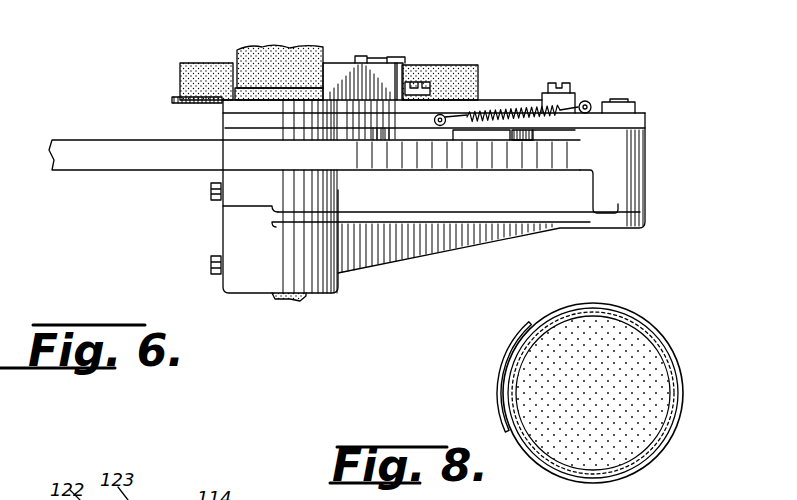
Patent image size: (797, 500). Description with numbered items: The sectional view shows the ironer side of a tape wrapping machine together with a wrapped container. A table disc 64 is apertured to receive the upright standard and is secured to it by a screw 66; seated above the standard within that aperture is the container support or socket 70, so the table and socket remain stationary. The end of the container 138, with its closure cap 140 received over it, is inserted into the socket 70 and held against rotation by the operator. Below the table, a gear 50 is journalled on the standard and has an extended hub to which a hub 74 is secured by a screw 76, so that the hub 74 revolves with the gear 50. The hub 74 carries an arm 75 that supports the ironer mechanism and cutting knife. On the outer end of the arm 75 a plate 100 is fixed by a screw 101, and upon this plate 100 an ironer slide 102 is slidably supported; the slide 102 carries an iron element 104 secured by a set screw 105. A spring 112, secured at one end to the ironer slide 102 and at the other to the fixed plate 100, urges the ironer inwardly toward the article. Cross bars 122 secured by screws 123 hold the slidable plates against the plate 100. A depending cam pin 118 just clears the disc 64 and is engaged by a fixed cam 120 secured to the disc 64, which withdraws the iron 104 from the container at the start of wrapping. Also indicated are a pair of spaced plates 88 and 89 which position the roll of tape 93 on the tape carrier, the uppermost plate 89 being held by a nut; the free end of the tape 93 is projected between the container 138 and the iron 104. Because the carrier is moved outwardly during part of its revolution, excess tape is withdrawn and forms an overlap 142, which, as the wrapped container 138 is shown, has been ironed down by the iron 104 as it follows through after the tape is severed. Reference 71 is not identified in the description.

In FIG. 6, the gear 50 is at (292, 300).
In FIG. 6, the table disc 64 is at (80, 145).
In FIG. 6, the screw 66 is at (210, 190).
In FIG. 6, the container support or socket 70 is at (237, 103).
In FIG. 6, the plate 71 is at (232, 113).
In FIG. 6, the hub 74 is at (235, 245).
In FIG. 6, the arm 75 is at (617, 192).
In FIG. 6, the screw 76 is at (210, 265).
In FIG. 6, the plate 88 is at (172, 100).
In FIG. 6, the plate 89 is at (337, 63).
In FIG. 6, the roll of tape 93 is at (180, 68).
In FIG. 8, the roll of tape 93 is at (680, 370).
In FIG. 6, the plate 100 is at (637, 117).
In FIG. 6, the screw 101 is at (620, 105).
In FIG. 6, the ironer slide 102 is at (483, 107).
In FIG. 6, the iron element 104 is at (383, 77).
In FIG. 6, the set screw 105 is at (373, 60).
In FIG. 6, the spring 112 is at (508, 110).
In FIG. 6, the cam pin 118 is at (527, 140).
In FIG. 6, the fixed cam 120 is at (472, 135).
In FIG. 6, the cross bar 122 is at (460, 70).
In FIG. 6, the screw 123 is at (563, 83).
In FIG. 6, the container 138 is at (290, 57).
In FIG. 8, the container 138 is at (647, 323).
In FIG. 6, the closure cap 140 is at (255, 95).
In FIG. 8, the overlap 142 is at (503, 385).